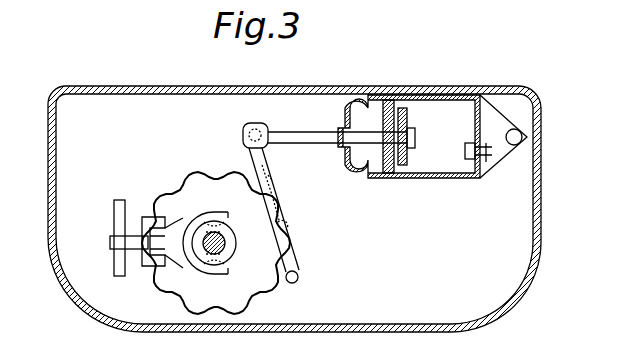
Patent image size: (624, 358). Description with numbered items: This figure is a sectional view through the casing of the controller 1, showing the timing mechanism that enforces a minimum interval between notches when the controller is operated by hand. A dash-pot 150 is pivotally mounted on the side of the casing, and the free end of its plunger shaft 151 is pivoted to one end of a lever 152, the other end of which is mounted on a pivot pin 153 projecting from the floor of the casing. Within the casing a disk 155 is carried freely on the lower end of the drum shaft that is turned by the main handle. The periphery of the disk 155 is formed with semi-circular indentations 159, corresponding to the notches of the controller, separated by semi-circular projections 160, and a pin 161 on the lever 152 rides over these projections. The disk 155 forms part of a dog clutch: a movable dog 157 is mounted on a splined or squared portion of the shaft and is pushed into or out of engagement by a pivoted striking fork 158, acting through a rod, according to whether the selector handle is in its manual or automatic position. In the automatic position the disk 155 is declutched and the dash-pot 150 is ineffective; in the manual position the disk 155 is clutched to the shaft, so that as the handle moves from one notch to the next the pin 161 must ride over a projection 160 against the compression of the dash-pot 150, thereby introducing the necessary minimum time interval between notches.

The controller 1 is at (507, 287).
The dash-pot 150 is at (435, 150).
The plunger shaft 151 is at (307, 131).
The lever 152 is at (278, 183).
The pivot pin 153 is at (299, 278).
The disk 155 is at (172, 275).
The movable dog 157 is at (205, 240).
The striking fork 158 is at (157, 240).
The semi-circular indentations 159 is at (220, 318).
The semi-circular projections 160 is at (276, 290).
The pin 161 is at (288, 240).